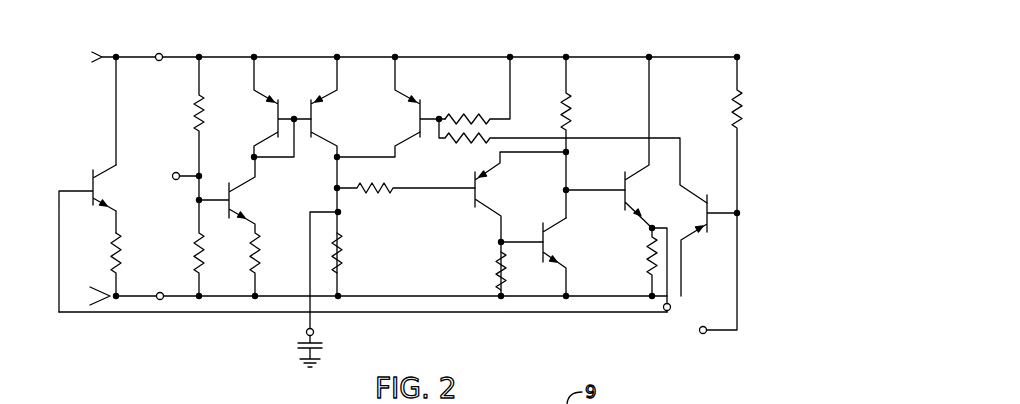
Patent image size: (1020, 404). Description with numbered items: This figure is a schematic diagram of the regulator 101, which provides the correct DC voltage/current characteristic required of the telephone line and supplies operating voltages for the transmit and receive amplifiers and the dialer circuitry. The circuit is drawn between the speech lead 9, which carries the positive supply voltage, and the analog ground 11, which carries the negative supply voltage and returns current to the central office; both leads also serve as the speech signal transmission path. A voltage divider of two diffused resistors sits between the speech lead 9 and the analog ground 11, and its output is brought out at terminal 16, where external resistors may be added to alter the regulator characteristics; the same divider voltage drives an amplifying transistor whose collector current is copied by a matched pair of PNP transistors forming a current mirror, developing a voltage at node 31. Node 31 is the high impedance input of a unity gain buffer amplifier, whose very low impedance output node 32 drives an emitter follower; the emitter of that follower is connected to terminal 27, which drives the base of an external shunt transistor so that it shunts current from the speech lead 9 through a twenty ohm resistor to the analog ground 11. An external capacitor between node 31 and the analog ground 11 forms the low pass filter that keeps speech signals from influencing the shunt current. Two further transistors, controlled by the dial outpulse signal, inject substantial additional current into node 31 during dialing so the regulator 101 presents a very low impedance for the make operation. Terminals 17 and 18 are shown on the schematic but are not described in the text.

The speech lead 9 is at (106, 57).
The analog ground 11 is at (112, 298).
The terminal 16 is at (172, 175).
The capacitor terminal 17 is at (334, 289).
The common lead 18 is at (390, 288).
The terminal 27 is at (671, 308).
The node 31 is at (337, 188).
The output node 32 is at (566, 188).
The regulator 101 is at (702, 42).